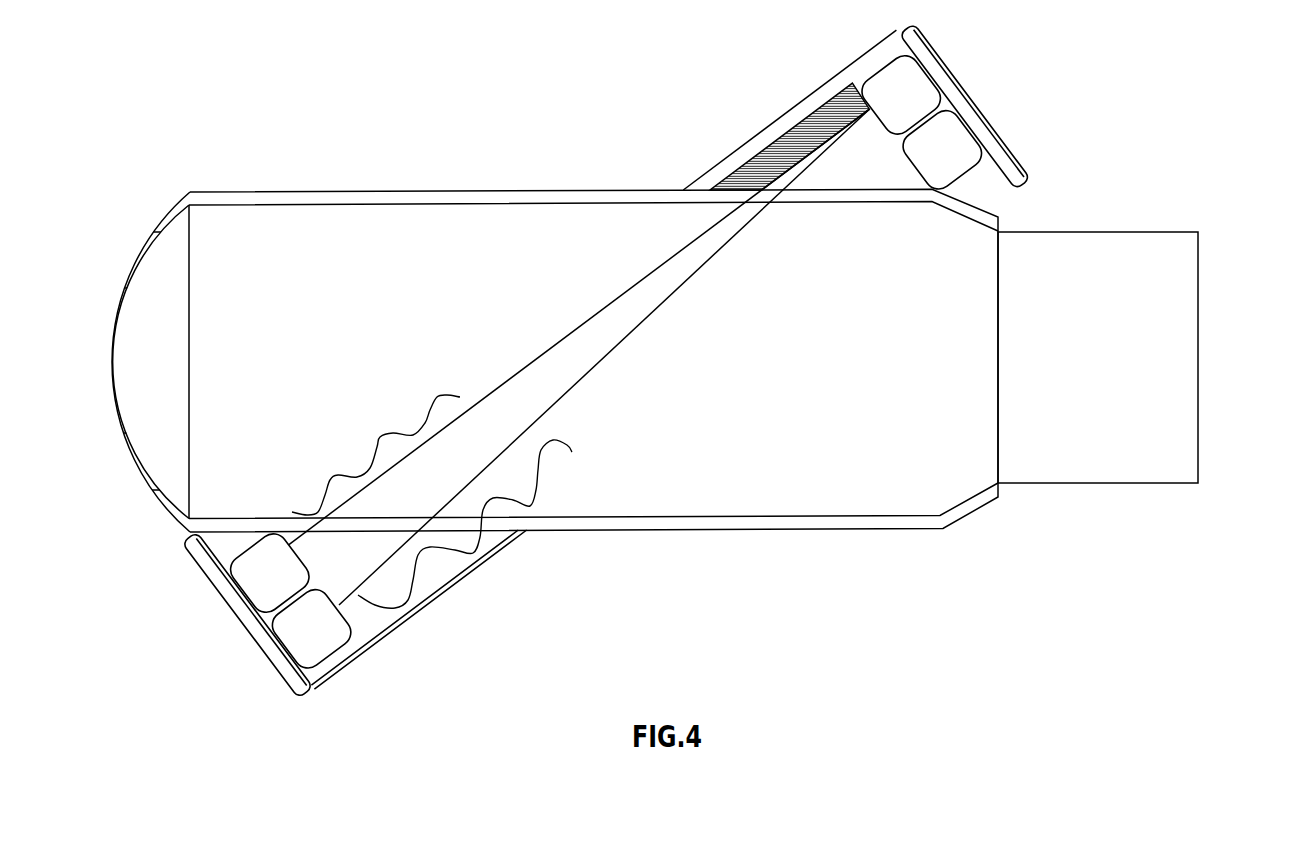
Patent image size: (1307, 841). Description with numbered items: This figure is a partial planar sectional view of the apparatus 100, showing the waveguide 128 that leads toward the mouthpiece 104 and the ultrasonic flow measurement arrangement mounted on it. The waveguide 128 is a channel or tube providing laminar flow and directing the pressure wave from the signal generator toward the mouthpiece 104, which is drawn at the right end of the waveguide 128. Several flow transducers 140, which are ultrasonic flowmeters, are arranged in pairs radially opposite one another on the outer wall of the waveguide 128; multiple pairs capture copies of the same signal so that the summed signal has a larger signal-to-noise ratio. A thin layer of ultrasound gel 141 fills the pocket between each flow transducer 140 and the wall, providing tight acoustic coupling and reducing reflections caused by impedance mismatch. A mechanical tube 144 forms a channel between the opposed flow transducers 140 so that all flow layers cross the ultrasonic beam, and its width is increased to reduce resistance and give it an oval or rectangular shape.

The apparatus 100 is at (1174, 122).
The mouthpiece 104 is at (1088, 465).
The waveguide 128 is at (882, 529).
The flow transducers 140 is at (915, 77).
The ultrasound gel 141 is at (797, 143).
The mechanical tube 144 is at (727, 172).